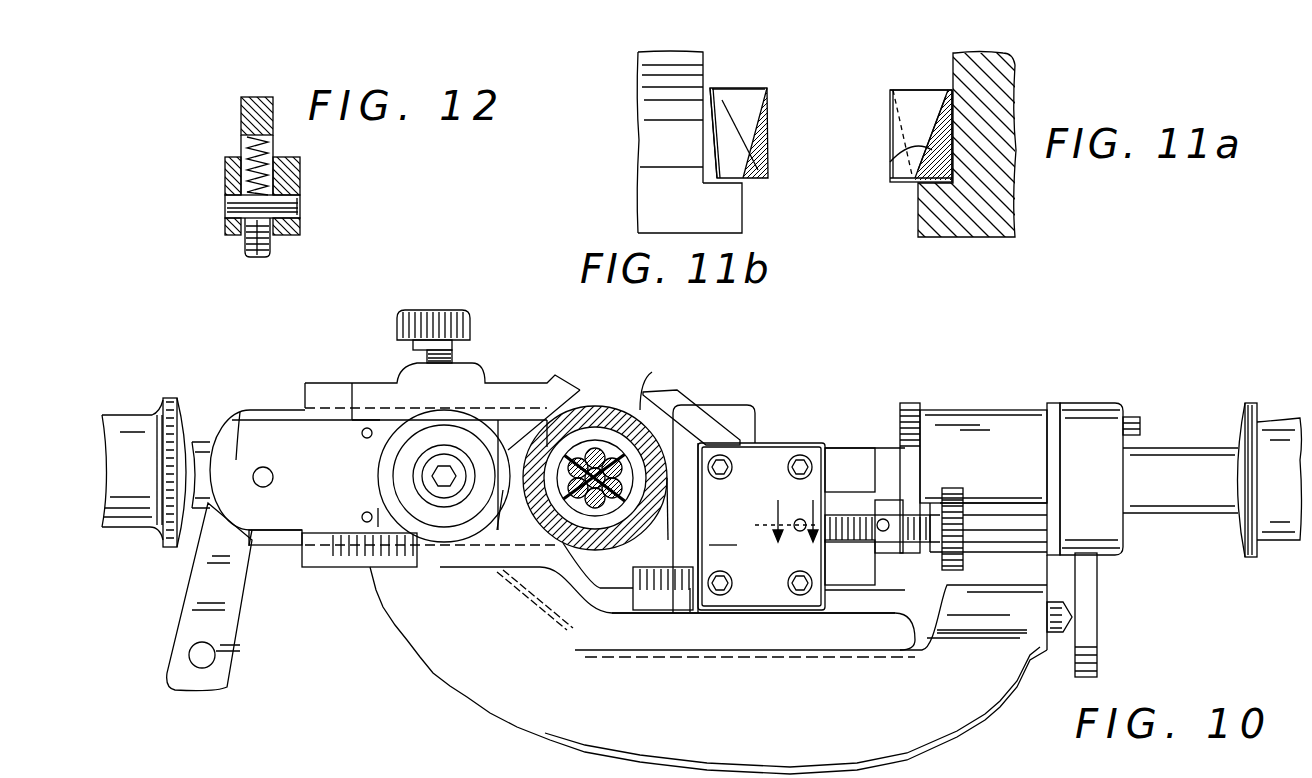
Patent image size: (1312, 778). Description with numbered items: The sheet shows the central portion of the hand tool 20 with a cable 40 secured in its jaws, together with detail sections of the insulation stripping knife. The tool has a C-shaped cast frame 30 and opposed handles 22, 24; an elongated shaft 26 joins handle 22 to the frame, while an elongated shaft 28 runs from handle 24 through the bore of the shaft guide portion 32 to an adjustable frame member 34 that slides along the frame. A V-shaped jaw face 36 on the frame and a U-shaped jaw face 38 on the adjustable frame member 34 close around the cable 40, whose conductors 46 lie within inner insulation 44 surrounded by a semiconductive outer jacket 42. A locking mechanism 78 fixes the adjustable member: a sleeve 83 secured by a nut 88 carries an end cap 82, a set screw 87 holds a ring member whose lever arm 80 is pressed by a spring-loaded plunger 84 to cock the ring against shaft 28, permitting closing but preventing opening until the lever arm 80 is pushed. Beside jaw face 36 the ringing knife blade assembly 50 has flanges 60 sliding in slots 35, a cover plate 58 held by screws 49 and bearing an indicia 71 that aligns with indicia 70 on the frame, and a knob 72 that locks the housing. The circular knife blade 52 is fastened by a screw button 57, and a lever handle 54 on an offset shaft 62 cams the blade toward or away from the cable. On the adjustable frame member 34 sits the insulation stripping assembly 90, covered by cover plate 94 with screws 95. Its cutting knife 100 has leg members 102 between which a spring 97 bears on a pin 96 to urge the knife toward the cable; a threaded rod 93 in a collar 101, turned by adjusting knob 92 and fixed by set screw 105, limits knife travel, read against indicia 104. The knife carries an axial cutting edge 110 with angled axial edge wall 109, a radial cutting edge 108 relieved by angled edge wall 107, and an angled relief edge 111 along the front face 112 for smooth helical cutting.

In FIG. 10, the hand tool 20 is at (418, 665).
In FIG. 10, the handle 22 is at (130, 424).
In FIG. 10, the handle 24 is at (1287, 545).
In FIG. 10, the elongated shaft 26 is at (200, 442).
In FIG. 10, the elongated shaft 28 is at (853, 448).
In FIG. 10, the frame 30 is at (512, 712).
In FIG. 10, the shaft guide portion 32 is at (968, 410).
In FIG. 12, the adjustable frame member 34 is at (298, 174).
In FIG. 11b, the adjustable frame member 34 is at (740, 213).
In FIG. 11a, the adjustable frame member 34 is at (1012, 208).
In FIG. 10, the adjustable frame member 34 is at (742, 405).
In FIG. 10, the slots 35 is at (392, 380).
In FIG. 10, the jaw face 36 is at (490, 540).
In FIG. 11b, the jaw face 38 is at (648, 108).
In FIG. 10, the jaw face 38 is at (600, 451).
In FIG. 10, the cable 40 is at (588, 406).
In FIG. 10, the semiconductive outer jacket 42 is at (546, 604).
In FIG. 10, the inner insulation 44 is at (596, 430).
In FIG. 10, the conductors 46 is at (605, 440).
In FIG. 10, the screws 49 is at (361, 434).
In FIG. 10, the ringing knife blade assembly 50 is at (264, 400).
In FIG. 10, the circular knife blade 52 is at (476, 425).
In FIG. 10, the lever handle 54 is at (233, 627).
In FIG. 10, the screw button 57 is at (437, 497).
In FIG. 10, the cover plate 58 is at (282, 532).
In FIG. 10, the flanges 60 is at (293, 407).
In FIG. 10, the offset shaft 62 is at (257, 470).
In FIG. 10, the indicia 70 is at (358, 548).
In FIG. 10, the indicia 71 is at (377, 511).
In FIG. 10, the knob 72 is at (417, 311).
In FIG. 10, the locking mechanism 78 is at (1135, 548).
In FIG. 10, the lever arm 80 is at (1097, 616).
In FIG. 10, the end cap 82 is at (1092, 403).
In FIG. 10, the sleeve 83 is at (1053, 403).
In FIG. 10, the cylindrical plunger 84 is at (1055, 634).
In FIG. 10, the set screw 87 is at (1137, 417).
In FIG. 10, the nut 88 is at (909, 403).
In FIG. 10, the insulation stripping assembly 90 is at (800, 440).
In FIG. 10, the adjusting knob 92 is at (963, 556).
In FIG. 12, the threaded rod 93 is at (248, 248).
In FIG. 10, the threaded rod 93 is at (858, 515).
In FIG. 12, the cover plate 94 is at (228, 170).
In FIG. 10, the cover plate 94 is at (723, 533).
In FIG. 10, the screws 95 is at (787, 467).
In FIG. 12, the pin 96 is at (226, 208).
In FIG. 10, the pin 96 is at (798, 533).
In FIG. 12, the spring 97 is at (272, 150).
In FIG. 12, the cutting knife 100 is at (262, 104).
In FIG. 11b, the cutting knife 100 is at (752, 82).
In FIG. 11a, the cutting knife 100 is at (913, 84).
In FIG. 10, the cutting knife 100 is at (680, 467).
In FIG. 10, the collar 101 is at (880, 600).
In FIG. 10, the leg members 102 is at (828, 492).
In FIG. 10, the indicia 104 is at (656, 592).
In FIG. 10, the set screw 105 is at (880, 553).
In FIG. 11a, the angled edge wall 107 is at (910, 150).
In FIG. 11b, the radial direction cutting edge 108 is at (711, 86).
In FIG. 11a, the radial direction cutting edge 108 is at (948, 88).
In FIG. 10, the radial direction cutting edge 108 is at (690, 590).
In FIG. 11a, the axial edge wall 109 is at (910, 108).
In FIG. 11b, the axial direction cutting edge 110 is at (737, 87).
In FIG. 11a, the axial direction cutting edge 110 is at (896, 90).
In FIG. 10, the axial direction cutting edge 110 is at (640, 556).
In FIG. 11b, the angled relief edge 111 is at (752, 142).
In FIG. 11a, the angled relief edge 111 is at (900, 128).
In FIG. 11b, the front face 112 is at (745, 112).